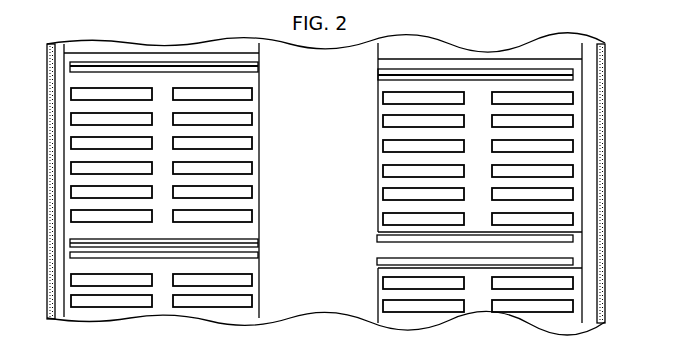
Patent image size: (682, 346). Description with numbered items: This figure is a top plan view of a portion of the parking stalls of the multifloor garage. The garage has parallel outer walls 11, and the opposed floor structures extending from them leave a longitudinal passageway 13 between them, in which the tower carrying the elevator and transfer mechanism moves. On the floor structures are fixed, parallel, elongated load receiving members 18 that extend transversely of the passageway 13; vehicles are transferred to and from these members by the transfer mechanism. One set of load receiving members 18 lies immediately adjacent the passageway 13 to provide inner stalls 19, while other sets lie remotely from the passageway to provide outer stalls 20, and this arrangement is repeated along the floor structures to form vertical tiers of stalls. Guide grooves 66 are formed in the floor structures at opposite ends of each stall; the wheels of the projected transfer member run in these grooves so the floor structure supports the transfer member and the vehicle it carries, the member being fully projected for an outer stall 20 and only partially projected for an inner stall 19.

The outer walls 11 is at (50, 182).
The passageway 13 is at (332, 265).
The load receiving members 18 is at (244, 192).
The inner stalls 19 is at (256, 109).
The outer stalls 20 is at (89, 106).
The guide grooves 66 is at (78, 68).